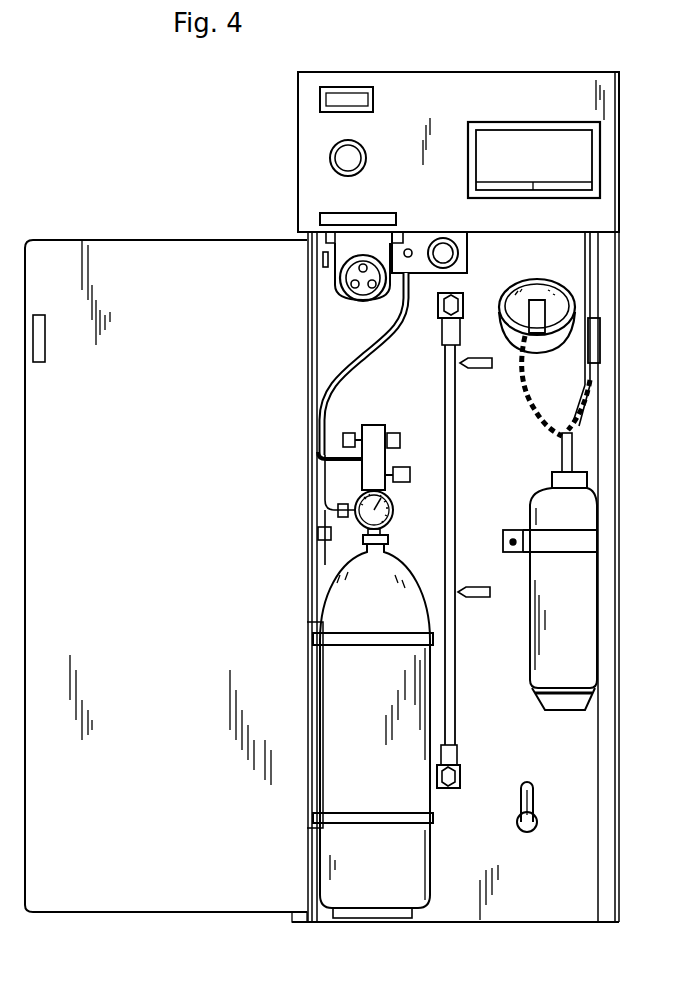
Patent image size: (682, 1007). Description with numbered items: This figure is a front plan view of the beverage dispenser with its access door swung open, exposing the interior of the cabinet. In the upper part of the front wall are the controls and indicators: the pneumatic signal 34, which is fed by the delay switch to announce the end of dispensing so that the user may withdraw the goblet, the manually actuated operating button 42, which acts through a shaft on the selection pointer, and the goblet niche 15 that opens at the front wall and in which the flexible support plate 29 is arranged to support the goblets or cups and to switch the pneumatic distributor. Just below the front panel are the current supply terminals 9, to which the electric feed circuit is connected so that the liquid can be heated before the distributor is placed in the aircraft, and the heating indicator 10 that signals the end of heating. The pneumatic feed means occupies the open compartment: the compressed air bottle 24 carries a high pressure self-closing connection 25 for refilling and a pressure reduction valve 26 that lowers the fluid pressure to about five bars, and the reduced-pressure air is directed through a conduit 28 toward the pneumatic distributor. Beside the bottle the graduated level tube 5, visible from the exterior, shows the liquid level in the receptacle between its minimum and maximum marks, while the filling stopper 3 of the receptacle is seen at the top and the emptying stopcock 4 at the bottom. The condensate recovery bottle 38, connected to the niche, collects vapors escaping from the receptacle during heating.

The filling stopper 3 is at (560, 306).
The emptying stopcock 4 is at (535, 815).
The graduated level tube 5 is at (452, 721).
The current supply terminals 9 is at (341, 299).
The heating indicator 10 is at (320, 262).
The goblet niche 15 is at (582, 158).
The compressed air bottle 24 is at (342, 738).
The high pressure self-closing connection 25 is at (465, 270).
The pressure reduction valve 26 is at (374, 471).
The conduit 28 is at (312, 372).
The flexible support plate 29 is at (533, 155).
The pneumatic signal 34 is at (343, 158).
The condensate recovery bottle 38 is at (590, 603).
The operating button 42 is at (345, 214).